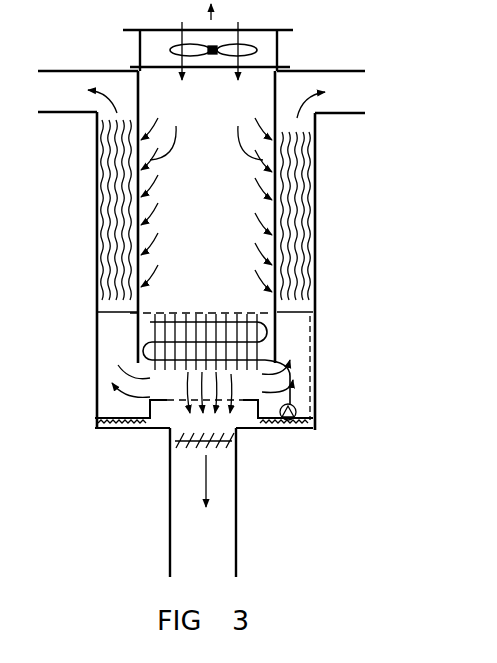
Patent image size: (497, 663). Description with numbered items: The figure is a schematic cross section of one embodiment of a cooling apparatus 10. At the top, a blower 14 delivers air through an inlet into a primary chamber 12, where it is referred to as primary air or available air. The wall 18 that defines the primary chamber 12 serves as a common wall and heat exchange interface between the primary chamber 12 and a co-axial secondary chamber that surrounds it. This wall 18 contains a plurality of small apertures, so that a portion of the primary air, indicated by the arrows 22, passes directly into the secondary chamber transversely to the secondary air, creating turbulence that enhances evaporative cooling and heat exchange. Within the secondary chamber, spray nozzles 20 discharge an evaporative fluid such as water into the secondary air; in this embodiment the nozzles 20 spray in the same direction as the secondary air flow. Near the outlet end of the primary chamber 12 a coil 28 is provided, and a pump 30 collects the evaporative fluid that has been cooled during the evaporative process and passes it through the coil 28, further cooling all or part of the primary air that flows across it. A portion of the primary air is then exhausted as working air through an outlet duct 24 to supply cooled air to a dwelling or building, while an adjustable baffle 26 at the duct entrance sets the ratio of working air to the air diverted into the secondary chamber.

The cooling apparatus 10 is at (421, 243).
The primary chamber 12 is at (219, 238).
The blower 14 is at (262, 52).
The wall 18 is at (273, 170).
The spray nozzles 20 is at (120, 296).
The arrows 22 is at (152, 142).
The outlet duct 24 is at (237, 500).
The baffle 26 is at (176, 441).
The coil 28 is at (205, 312).
The pump 30 is at (288, 421).